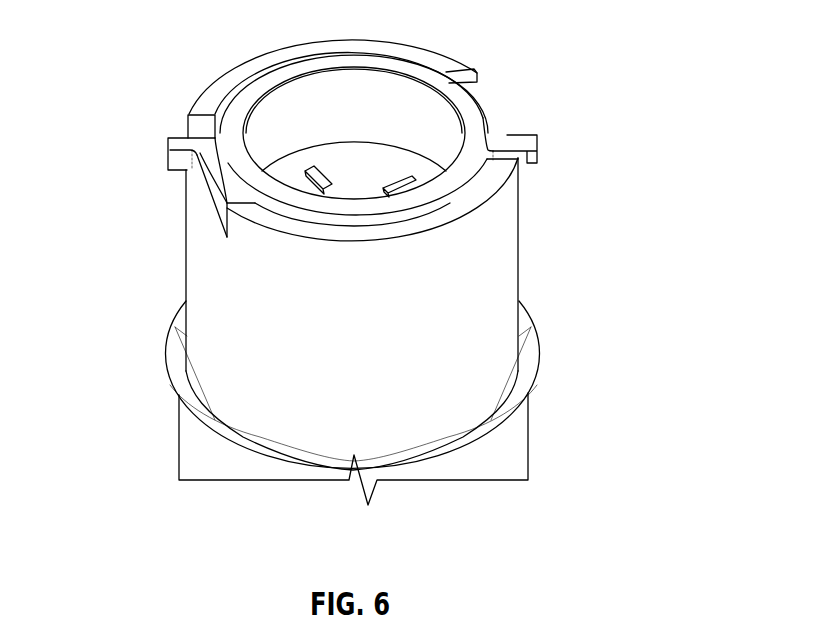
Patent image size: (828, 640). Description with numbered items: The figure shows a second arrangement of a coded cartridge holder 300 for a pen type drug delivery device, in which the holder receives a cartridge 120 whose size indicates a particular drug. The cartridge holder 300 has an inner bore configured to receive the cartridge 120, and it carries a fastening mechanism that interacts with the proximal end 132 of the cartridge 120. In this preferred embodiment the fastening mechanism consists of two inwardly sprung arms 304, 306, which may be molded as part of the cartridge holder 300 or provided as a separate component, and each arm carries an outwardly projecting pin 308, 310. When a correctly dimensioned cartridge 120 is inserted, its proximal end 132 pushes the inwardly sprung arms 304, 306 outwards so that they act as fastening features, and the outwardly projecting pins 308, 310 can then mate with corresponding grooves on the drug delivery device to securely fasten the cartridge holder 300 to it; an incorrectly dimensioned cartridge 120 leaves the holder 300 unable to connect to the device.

The cartridge 120 is at (399, 107).
The proximal end of the cartridge 132 is at (243, 106).
The coded cartridge holder 300 is at (582, 310).
The inwardly sprung arm 304 is at (487, 105).
The inwardly sprung arm 306 is at (213, 190).
The outwardly projecting pin 308 is at (536, 152).
The outwardly projecting pin 310 is at (177, 157).